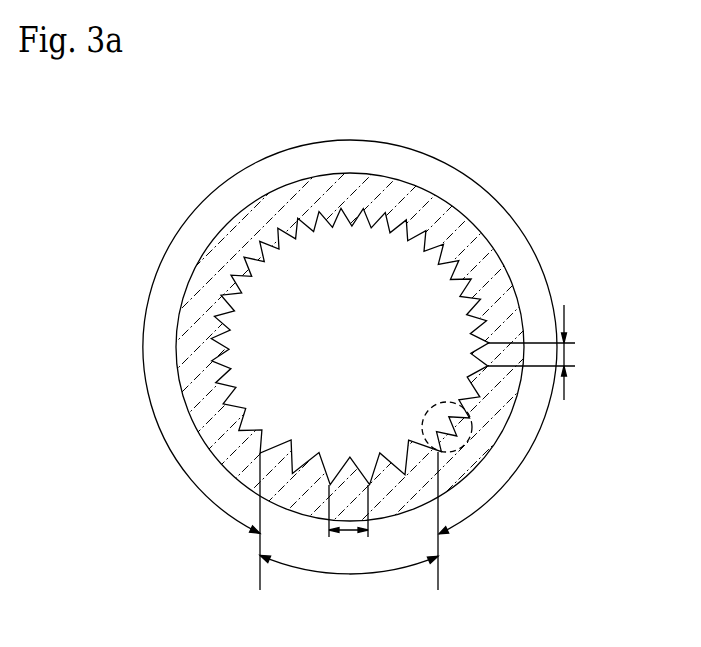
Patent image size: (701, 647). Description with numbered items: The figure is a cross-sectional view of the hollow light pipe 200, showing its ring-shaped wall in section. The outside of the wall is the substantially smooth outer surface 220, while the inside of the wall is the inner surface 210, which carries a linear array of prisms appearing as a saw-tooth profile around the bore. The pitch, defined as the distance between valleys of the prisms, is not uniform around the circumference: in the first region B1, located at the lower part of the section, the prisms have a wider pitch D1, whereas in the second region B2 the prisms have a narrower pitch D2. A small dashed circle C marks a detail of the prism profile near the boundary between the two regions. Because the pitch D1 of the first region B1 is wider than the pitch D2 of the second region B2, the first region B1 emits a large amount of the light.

The light pipe 200 is at (518, 148).
The inner surface 210 is at (438, 452).
The outer surface 220 is at (484, 242).
The detail circle C is at (480, 438).
The pitch of prisms in first region D1 is at (350, 529).
The pitch of prisms in second region D2 is at (554, 352).
The first region B1 is at (349, 533).
The second region B2 is at (120, 361).